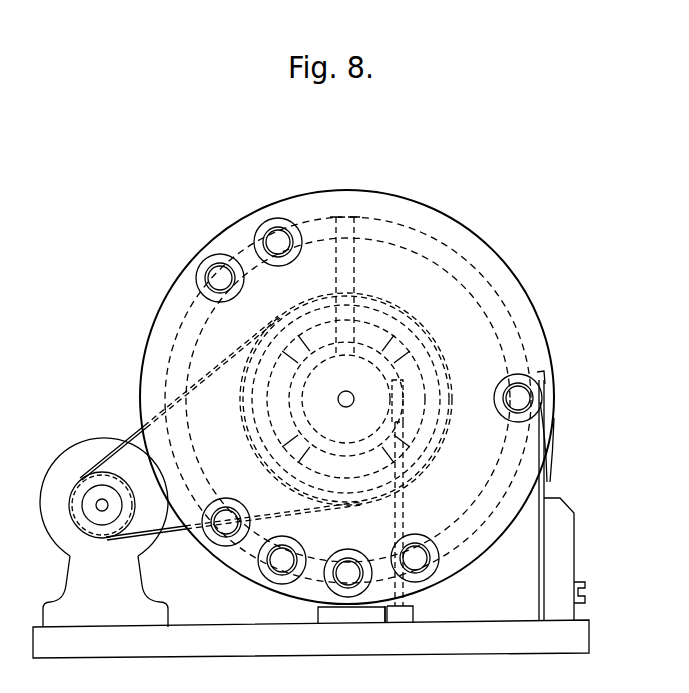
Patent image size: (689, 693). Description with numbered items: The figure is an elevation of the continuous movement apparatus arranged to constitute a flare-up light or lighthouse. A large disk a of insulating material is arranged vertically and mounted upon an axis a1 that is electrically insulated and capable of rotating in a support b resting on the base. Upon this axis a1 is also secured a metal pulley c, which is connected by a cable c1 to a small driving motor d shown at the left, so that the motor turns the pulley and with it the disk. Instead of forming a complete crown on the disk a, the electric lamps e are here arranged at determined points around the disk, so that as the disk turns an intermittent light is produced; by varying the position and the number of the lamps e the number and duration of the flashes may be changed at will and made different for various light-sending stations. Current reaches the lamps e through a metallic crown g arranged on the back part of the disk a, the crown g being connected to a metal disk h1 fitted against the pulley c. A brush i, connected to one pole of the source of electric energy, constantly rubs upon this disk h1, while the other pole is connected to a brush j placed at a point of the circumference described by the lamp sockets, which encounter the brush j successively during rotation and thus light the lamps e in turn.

The disk a is at (347, 397).
The axis a1 is at (344, 406).
The support b is at (334, 614).
The metal pulley c is at (436, 397).
The cable c1 is at (137, 436).
The driving motor d is at (104, 532).
The electric bulbs e is at (277, 262).
The metallic crown g is at (506, 320).
The metal disk h1 is at (306, 379).
The brush i is at (403, 516).
The brush j is at (540, 489).